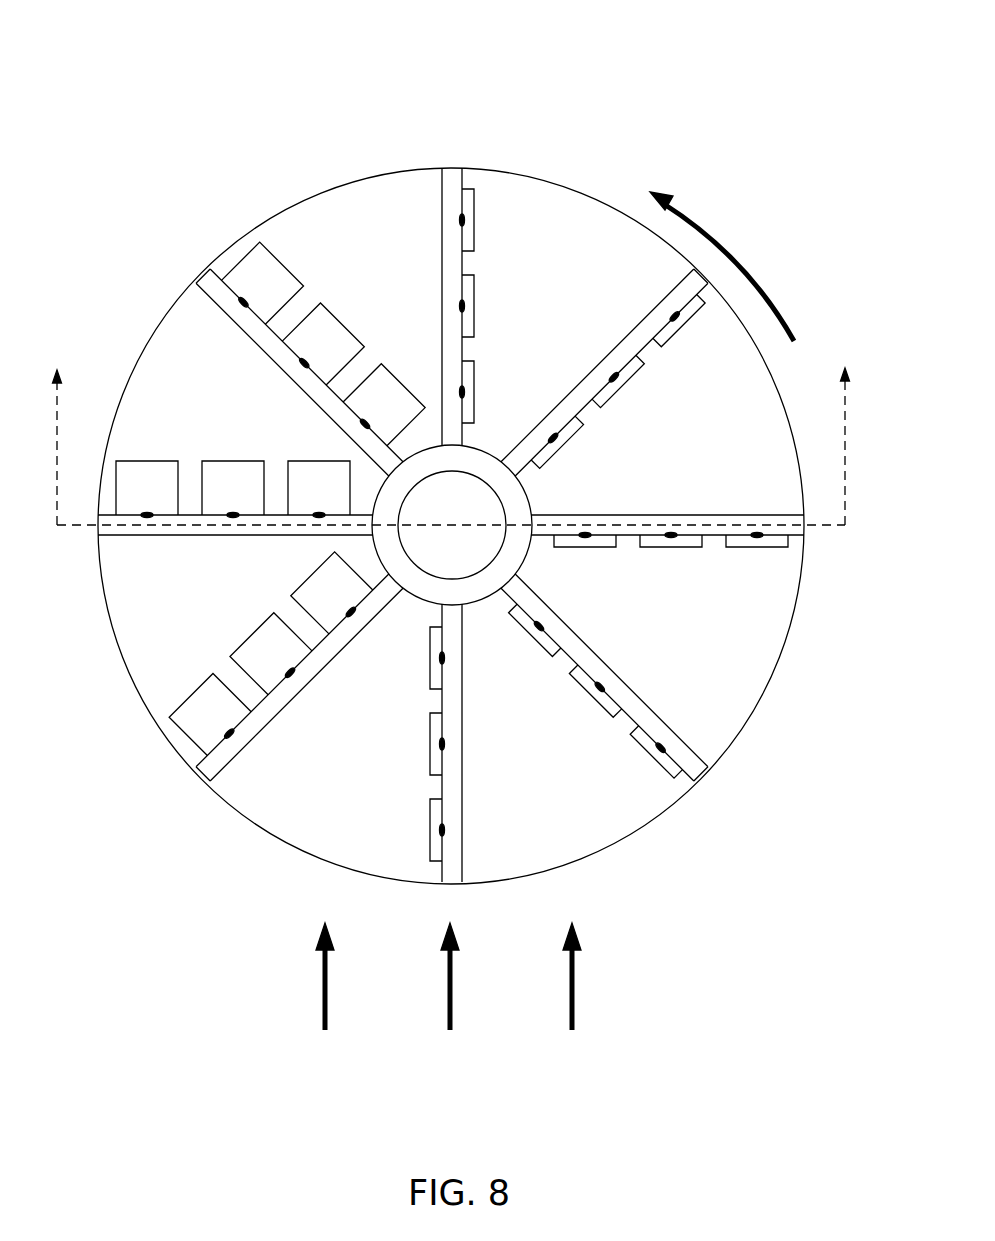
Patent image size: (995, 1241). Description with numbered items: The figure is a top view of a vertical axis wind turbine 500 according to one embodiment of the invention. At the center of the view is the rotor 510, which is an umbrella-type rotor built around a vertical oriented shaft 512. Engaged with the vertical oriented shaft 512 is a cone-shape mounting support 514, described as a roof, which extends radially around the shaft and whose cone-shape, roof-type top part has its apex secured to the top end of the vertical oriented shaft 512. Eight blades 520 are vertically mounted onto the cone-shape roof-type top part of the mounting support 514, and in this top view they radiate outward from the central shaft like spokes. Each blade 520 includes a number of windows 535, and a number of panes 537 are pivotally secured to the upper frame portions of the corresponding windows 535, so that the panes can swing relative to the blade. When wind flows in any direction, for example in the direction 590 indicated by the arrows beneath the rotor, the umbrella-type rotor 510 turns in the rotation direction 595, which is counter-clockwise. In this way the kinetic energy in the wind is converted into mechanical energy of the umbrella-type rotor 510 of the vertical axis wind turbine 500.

The vertical axis wind turbine 500 is at (481, 48).
The rotor 510 is at (226, 222).
The vertical oriented shaft 512 is at (472, 608).
The cone-shape mounting support 514 is at (662, 628).
The blade 520 is at (248, 735).
The window 535 is at (673, 735).
The pane 537 is at (652, 758).
The direction 590 is at (448, 1008).
The rotation direction 595 is at (699, 246).